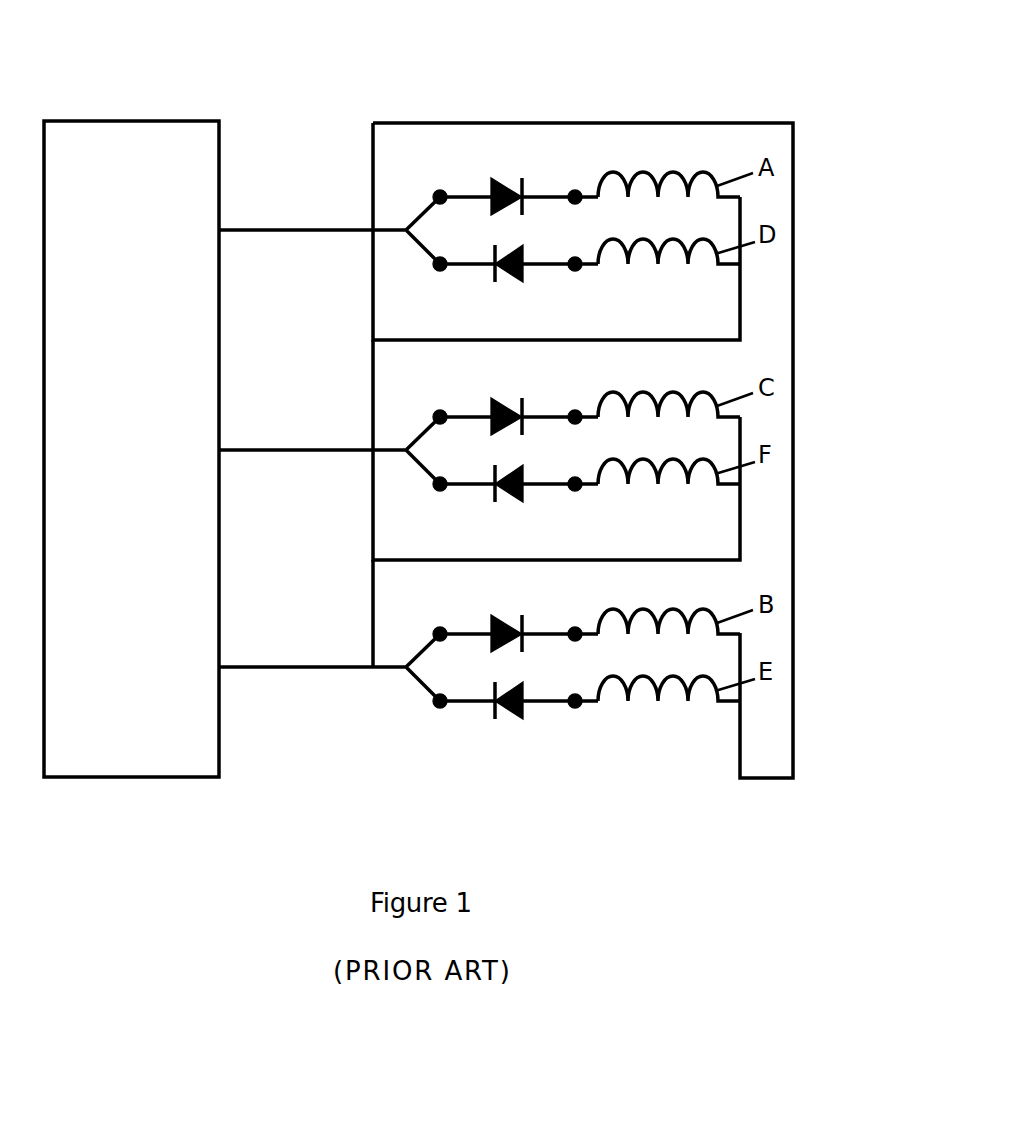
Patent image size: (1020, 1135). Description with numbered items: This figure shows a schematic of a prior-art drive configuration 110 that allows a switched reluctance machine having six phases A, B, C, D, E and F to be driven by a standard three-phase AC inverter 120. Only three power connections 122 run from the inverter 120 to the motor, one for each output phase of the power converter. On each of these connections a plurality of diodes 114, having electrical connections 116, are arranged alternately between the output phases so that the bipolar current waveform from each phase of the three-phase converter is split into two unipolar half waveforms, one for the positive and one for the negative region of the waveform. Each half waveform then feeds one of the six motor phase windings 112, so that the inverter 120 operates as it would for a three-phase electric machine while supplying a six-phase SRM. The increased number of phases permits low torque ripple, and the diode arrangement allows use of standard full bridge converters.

The drive configuration 110 is at (758, 80).
The winding / inductor 112 is at (650, 177).
The diodes 114 is at (500, 185).
The electrical connections 116 is at (436, 190).
The three-phase AC inverter 120 is at (153, 458).
The power connections 122 is at (246, 228).